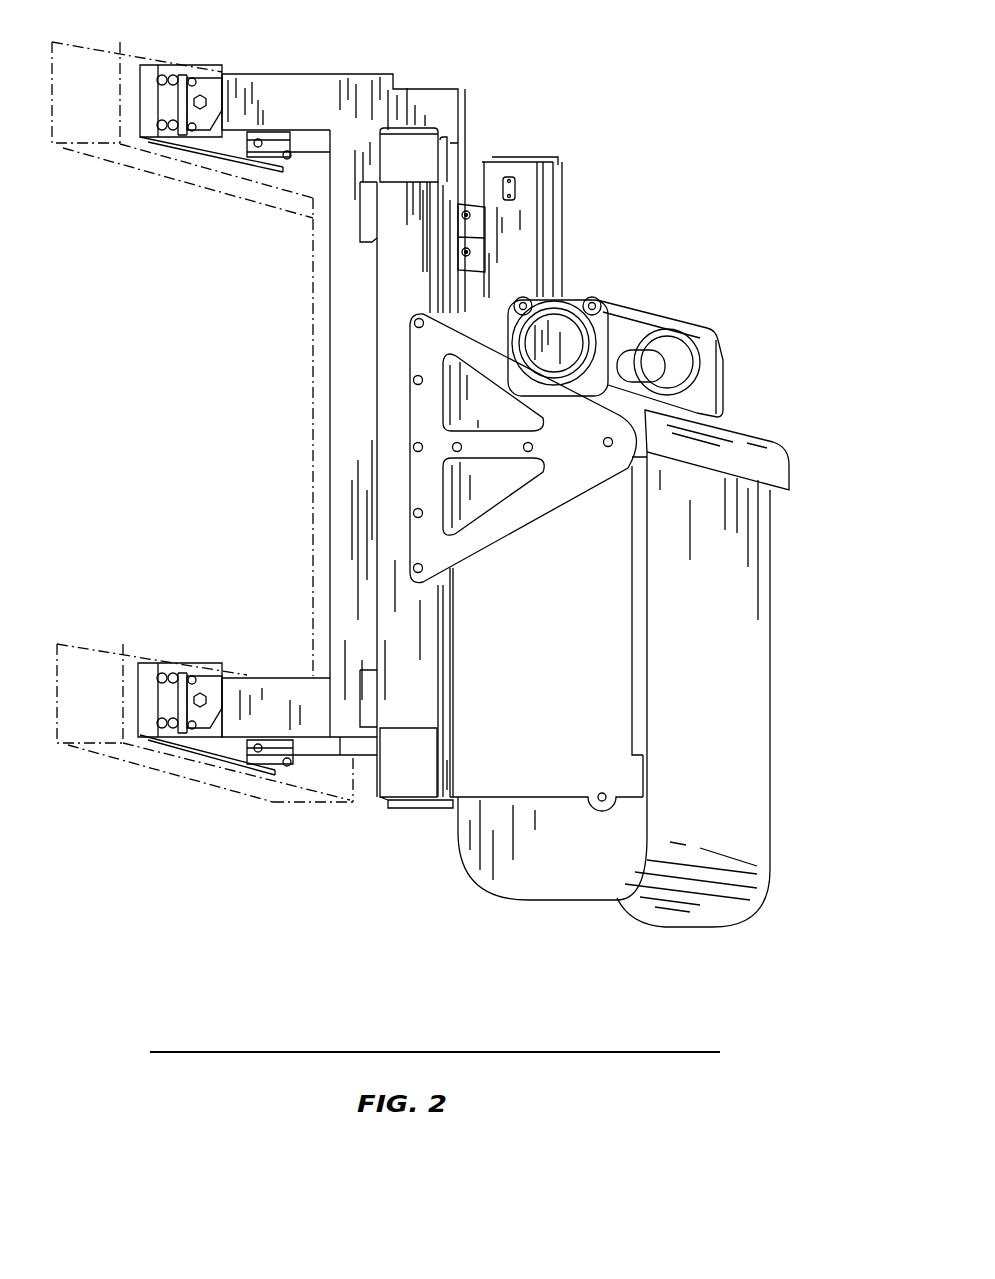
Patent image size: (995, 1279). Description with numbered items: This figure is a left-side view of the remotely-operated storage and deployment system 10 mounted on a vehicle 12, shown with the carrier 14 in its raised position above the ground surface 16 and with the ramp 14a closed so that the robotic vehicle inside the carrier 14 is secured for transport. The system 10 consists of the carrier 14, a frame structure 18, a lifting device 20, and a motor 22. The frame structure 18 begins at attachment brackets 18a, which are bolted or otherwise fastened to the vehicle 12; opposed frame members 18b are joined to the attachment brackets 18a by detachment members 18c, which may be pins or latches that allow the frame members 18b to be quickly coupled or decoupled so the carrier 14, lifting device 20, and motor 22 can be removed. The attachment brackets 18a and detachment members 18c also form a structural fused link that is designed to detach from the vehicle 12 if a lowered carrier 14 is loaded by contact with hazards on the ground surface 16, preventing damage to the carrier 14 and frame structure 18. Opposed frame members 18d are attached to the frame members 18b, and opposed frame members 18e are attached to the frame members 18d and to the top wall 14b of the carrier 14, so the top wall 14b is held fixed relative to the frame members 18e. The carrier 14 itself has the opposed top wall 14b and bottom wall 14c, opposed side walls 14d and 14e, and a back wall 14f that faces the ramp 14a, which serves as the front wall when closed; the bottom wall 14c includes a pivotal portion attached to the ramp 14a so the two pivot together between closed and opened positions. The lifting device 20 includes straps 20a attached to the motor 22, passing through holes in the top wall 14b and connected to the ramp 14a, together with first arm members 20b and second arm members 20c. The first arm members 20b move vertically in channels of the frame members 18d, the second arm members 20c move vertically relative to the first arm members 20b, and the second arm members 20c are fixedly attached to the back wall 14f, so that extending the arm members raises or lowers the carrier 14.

The remotely-operated storage and deployment system 10 is at (468, 475).
The vehicle 12 is at (201, 187).
The carrier 14 is at (605, 680).
The ramp 14a is at (723, 768).
The top wall 14b is at (757, 438).
The bottom wall 14c is at (560, 902).
The side wall 14d is at (538, 768).
The side wall 14e is at (773, 723).
The back wall 14f is at (393, 808).
The ground surface 16 is at (295, 1051).
The frame structure 18 is at (439, 398).
The attachment brackets 18a is at (187, 107).
The frame members 18b is at (349, 80).
The detachment members 18c is at (203, 97).
The frame members 18d is at (408, 168).
The frame members 18e is at (532, 503).
The lifting device 20 is at (525, 434).
The straps 20a is at (640, 403).
The first arm members 20b is at (448, 148).
The second arm members 20c is at (455, 165).
The motor 22 is at (530, 352).